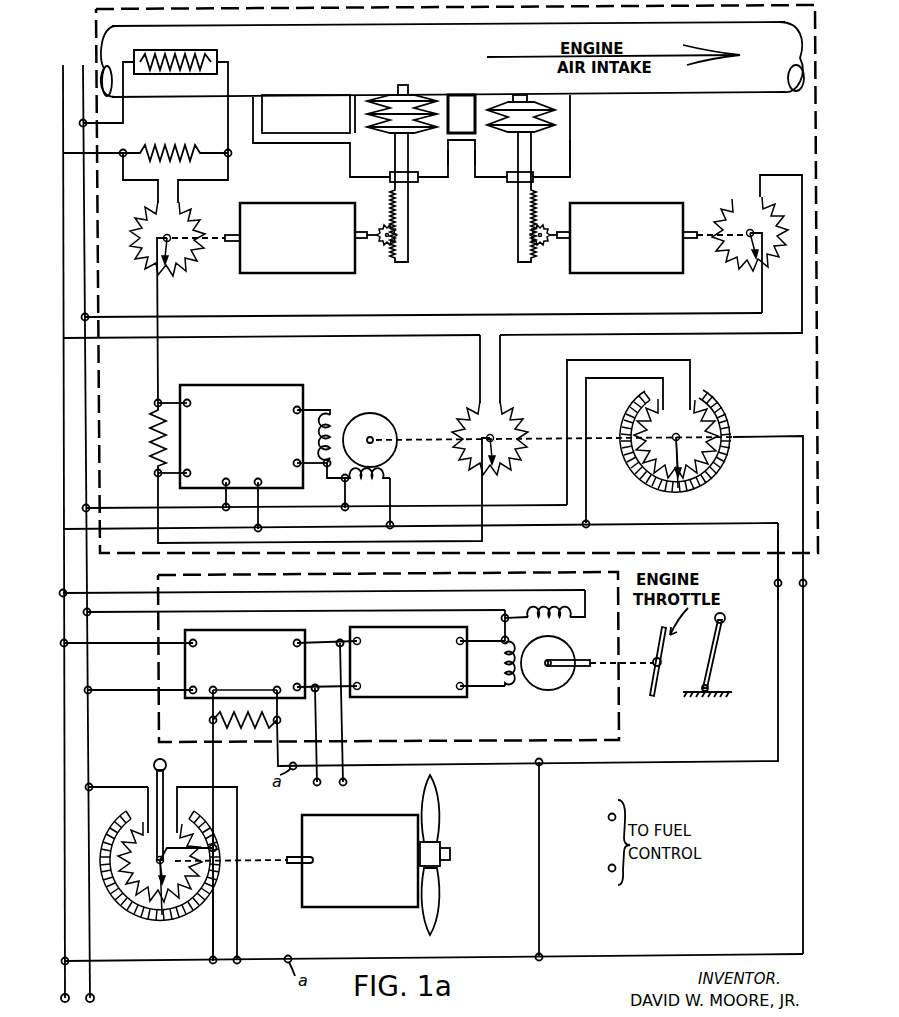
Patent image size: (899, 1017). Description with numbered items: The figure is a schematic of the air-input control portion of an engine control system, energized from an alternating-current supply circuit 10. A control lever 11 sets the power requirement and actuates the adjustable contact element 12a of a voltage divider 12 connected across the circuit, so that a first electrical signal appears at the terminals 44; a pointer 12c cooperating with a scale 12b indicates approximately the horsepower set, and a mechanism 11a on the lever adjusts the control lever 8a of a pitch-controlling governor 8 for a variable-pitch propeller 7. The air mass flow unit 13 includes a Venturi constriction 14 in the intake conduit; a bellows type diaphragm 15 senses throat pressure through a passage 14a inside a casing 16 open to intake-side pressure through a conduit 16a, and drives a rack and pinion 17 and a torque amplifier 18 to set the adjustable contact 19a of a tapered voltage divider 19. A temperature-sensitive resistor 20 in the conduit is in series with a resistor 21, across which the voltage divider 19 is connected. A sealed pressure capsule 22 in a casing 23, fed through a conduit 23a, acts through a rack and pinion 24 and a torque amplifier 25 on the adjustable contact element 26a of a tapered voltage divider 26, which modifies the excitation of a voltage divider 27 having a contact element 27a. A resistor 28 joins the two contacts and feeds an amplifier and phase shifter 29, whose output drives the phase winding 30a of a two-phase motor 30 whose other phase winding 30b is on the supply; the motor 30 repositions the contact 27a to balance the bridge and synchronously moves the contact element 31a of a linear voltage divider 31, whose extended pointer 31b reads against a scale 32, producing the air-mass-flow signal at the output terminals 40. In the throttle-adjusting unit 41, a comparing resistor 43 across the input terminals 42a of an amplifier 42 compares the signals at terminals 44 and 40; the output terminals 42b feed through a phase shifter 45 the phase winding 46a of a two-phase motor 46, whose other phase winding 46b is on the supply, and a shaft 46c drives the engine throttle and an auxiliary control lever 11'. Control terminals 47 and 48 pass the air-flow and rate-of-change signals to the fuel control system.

The variable-pitch propeller 7 is at (445, 828).
The pitch-controlling governor 8 is at (392, 815).
The control lever of the pitch-controlling governor 8a is at (296, 866).
The alternating-current supply circuit 10 is at (68, 727).
The control lever 11 is at (142, 808).
The auxiliary control lever 11' is at (722, 655).
The mechanism for adjusting the governor control lever 11a is at (250, 862).
The voltage divider 12 is at (137, 912).
The adjustable contact element 12a is at (148, 868).
The scale 12b is at (130, 812).
The pointer 12c is at (166, 918).
The air mass flow unit 13 is at (118, 378).
The Venturi constriction 14 is at (306, 114).
The passage 14a is at (402, 84).
The bellows type diaphragm 15 is at (412, 134).
The casing 16 is at (446, 165).
The conduit 16a is at (271, 137).
The rack and pinion 17 is at (392, 247).
The torque amplifier 18 is at (312, 272).
The voltage divider 19 is at (147, 265).
The adjustable contact 19a is at (176, 265).
The resistor 20 is at (216, 58).
The resistor 21 is at (166, 153).
The pressure capsule 22 is at (556, 118).
The casing 23 is at (572, 158).
The conduit 23a is at (466, 165).
The rack and pinion 24 is at (537, 247).
The torque amplifier 25 is at (620, 267).
The voltage divider 26 is at (772, 262).
The adjustable contact element 26a is at (745, 255).
The voltage divider 27 is at (508, 418).
The adjustable contact element 27a is at (498, 456).
The resistor 28 is at (150, 436).
The amplifier and phase shifter 29 is at (268, 400).
The two-phase motor 30 is at (380, 420).
The phase winding 30a is at (333, 417).
The phase winding 30b is at (385, 482).
The linear voltage divider 31 is at (720, 472).
The adjustable contact element 31a is at (666, 470).
The extended pointer 31b is at (680, 492).
The scale 32 is at (715, 400).
The output terminals 40 is at (778, 588).
The throttle-adjusting unit 41 is at (160, 630).
The amplifier 42 is at (274, 634).
The input terminals 42a is at (276, 690).
The output terminals 42b is at (316, 686).
The comparing resistor 43 is at (250, 730).
The terminals 44 is at (216, 846).
The phase shifter 45 is at (425, 635).
The two-phase motor 46 is at (566, 657).
The phase winding 46a is at (506, 686).
The phase winding 46b is at (556, 610).
The shaft 46c is at (650, 663).
The control terminals 47 is at (612, 864).
The control terminals 48 is at (339, 783).